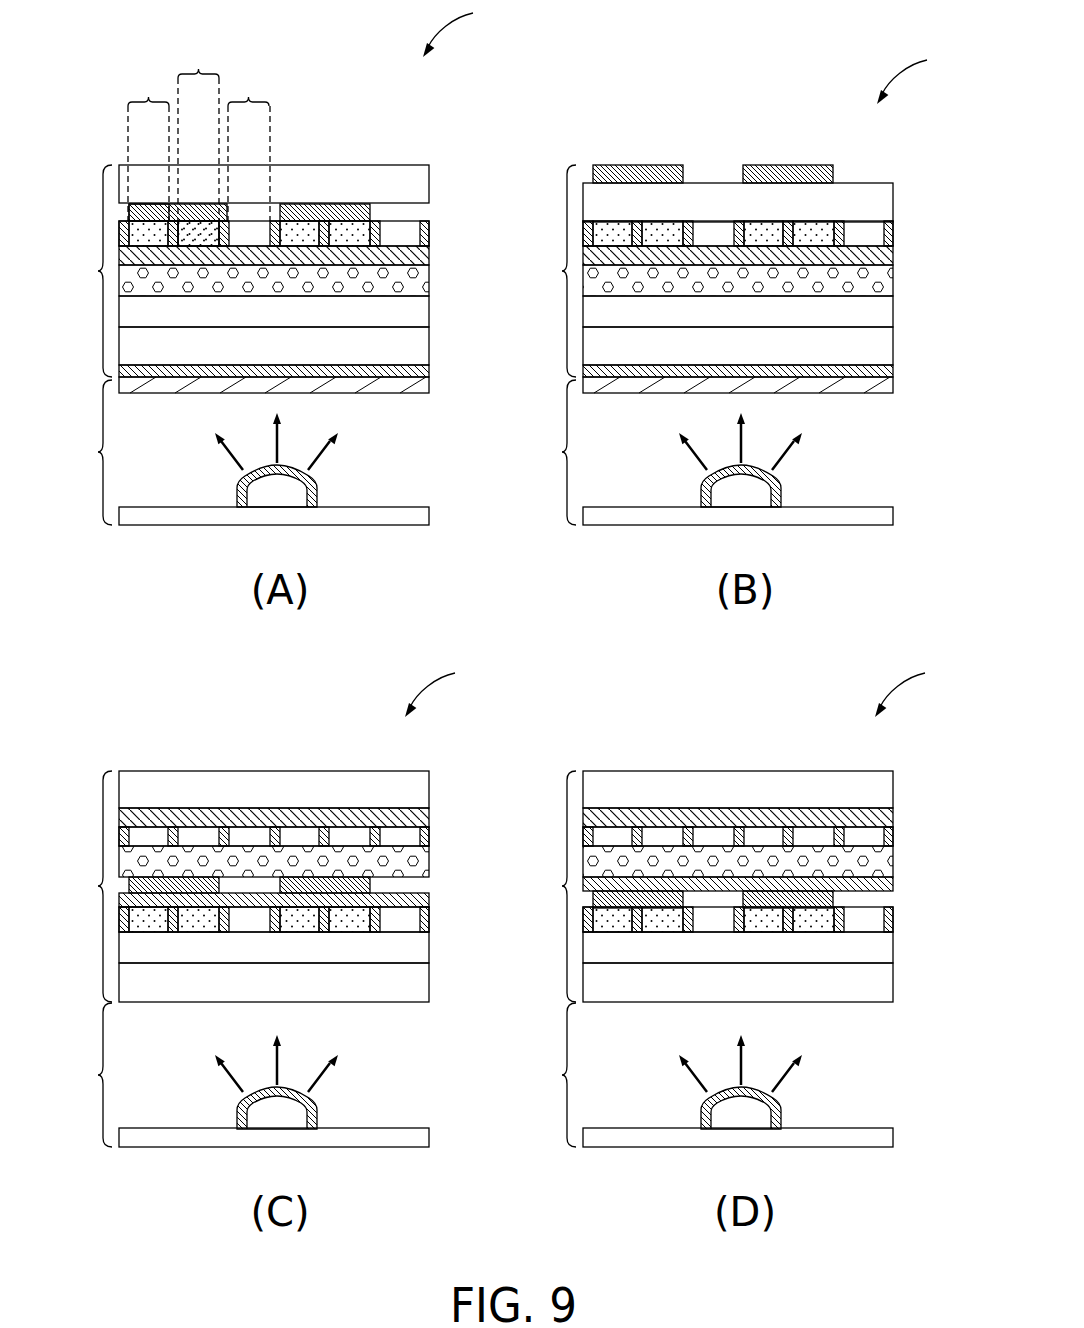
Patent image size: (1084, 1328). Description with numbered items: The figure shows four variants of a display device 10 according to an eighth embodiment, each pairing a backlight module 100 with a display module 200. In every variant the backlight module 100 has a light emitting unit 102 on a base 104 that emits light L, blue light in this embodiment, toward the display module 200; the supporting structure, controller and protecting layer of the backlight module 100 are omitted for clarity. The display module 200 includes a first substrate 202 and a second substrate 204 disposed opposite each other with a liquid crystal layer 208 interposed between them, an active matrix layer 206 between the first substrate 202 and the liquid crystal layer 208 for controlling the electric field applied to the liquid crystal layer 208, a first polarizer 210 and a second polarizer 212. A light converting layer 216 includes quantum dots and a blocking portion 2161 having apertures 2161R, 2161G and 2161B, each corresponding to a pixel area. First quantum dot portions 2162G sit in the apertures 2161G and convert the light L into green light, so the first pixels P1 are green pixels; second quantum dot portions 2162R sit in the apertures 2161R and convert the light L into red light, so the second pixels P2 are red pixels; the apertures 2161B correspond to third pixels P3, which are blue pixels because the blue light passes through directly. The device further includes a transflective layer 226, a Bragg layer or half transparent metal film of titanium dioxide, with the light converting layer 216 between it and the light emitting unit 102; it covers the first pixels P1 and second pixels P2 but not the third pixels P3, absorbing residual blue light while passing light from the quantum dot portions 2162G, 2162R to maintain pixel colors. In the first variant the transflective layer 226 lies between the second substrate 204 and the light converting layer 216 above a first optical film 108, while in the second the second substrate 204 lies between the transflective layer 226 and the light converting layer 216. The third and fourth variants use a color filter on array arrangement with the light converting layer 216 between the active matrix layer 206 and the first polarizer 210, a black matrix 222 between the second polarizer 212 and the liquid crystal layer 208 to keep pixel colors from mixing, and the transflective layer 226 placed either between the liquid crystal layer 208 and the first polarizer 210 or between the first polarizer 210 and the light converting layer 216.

The display device 10 is at (683, 359).
The backlight module 100 is at (313, 763).
The light emitting units 102 is at (322, 486).
The substrate 104 is at (540, 828).
The first optical film 108 is at (916, 403).
The display module 200 is at (313, 583).
The first substrate 202 is at (540, 664).
The second substrate 204 is at (540, 486).
The active matrix layer 206 is at (540, 629).
The liquid crystal layer 208 is at (540, 571).
The first polarizer 210 is at (540, 635).
The second polarizer 212 is at (540, 536).
The light converting layer 216 is at (540, 577).
The black matrix 222 is at (540, 835).
The transflective layer 226 is at (762, 900).
The blocking portion 2161 is at (378, 233).
The apertures 2161R is at (130, 88).
The apertures 2161G is at (199, 58).
The apertures 2161B is at (269, 88).
The second quantum dot portions 2162R is at (153, 217).
The first quantum dot portions 2162G is at (207, 230).
The light L is at (774, 1050).
The first pixel P1 is at (200, 113).
The second pixel P2 is at (136, 129).
The third pixel P3 is at (261, 129).